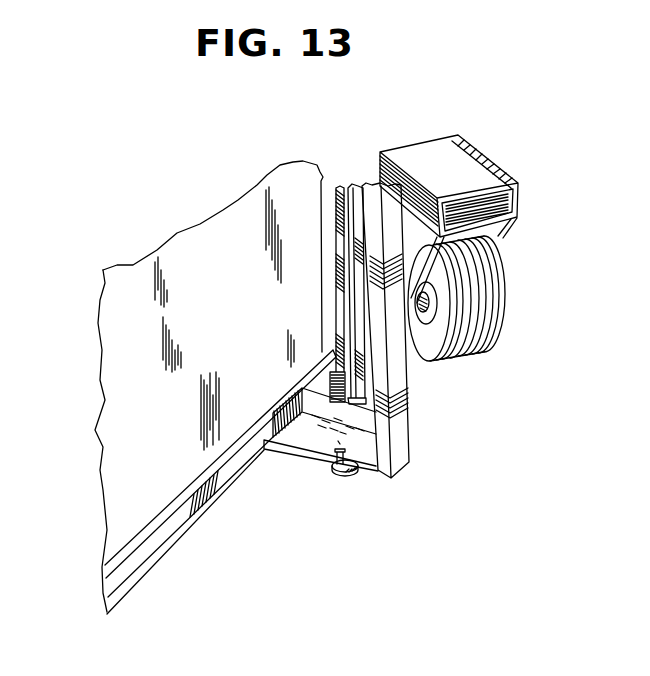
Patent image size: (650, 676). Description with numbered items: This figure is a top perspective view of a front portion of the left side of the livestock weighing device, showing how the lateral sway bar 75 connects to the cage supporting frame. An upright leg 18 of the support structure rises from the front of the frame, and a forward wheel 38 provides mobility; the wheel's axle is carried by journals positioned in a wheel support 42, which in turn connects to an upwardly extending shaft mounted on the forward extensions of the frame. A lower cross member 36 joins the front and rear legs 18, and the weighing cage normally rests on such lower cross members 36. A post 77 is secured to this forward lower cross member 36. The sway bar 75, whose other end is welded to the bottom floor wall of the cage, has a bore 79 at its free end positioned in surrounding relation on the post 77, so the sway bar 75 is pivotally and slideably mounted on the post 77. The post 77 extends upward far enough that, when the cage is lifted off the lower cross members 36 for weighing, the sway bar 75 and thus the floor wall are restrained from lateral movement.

The wheel support 42 is at (480, 163).
The forward wheel 38 is at (493, 284).
The upright leg 18 is at (398, 371).
The lower cross member 36 is at (373, 470).
The lateral sway bar 75 is at (310, 457).
The post 77 is at (330, 460).
The bore 79 is at (341, 476).